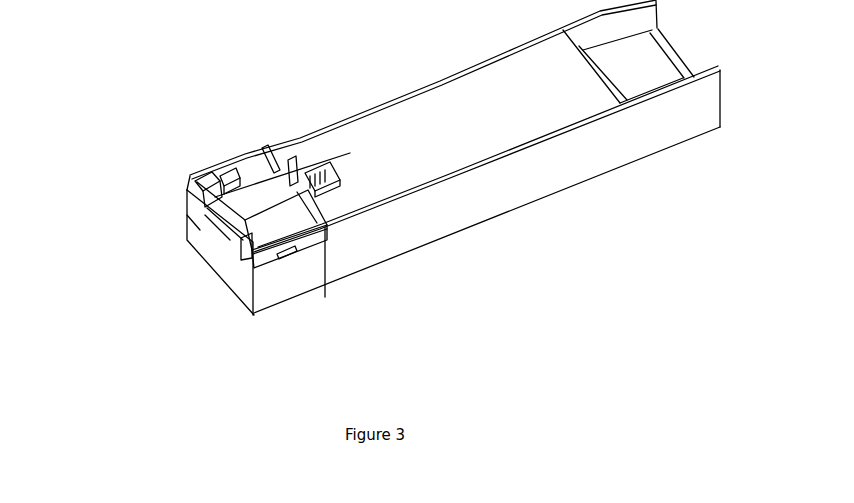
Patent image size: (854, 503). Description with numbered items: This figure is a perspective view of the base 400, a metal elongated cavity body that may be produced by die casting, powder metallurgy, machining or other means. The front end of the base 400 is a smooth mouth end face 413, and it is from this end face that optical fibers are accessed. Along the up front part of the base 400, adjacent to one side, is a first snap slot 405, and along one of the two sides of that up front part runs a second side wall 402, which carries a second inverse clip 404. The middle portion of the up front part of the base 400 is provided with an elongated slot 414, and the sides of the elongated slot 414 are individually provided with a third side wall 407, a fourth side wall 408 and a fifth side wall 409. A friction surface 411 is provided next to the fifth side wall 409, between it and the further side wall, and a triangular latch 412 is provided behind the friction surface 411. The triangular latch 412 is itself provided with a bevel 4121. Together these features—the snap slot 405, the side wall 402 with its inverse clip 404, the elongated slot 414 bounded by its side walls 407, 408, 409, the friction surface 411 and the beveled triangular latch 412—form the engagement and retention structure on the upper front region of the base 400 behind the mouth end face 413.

The base 400 is at (536, 230).
The second side wall 402 is at (340, 283).
The second inverse clip 404 is at (292, 256).
The first snap slot 405 is at (205, 186).
The third side wall 407 is at (228, 180).
The fourth side wall 408 is at (258, 315).
The fifth side wall 409 is at (265, 150).
The friction surface 411 is at (290, 160).
The triangular latch 412 is at (313, 172).
The bevel 4121 is at (322, 182).
The smooth mouth end face 413 is at (215, 252).
The elongated slot 414 is at (192, 242).